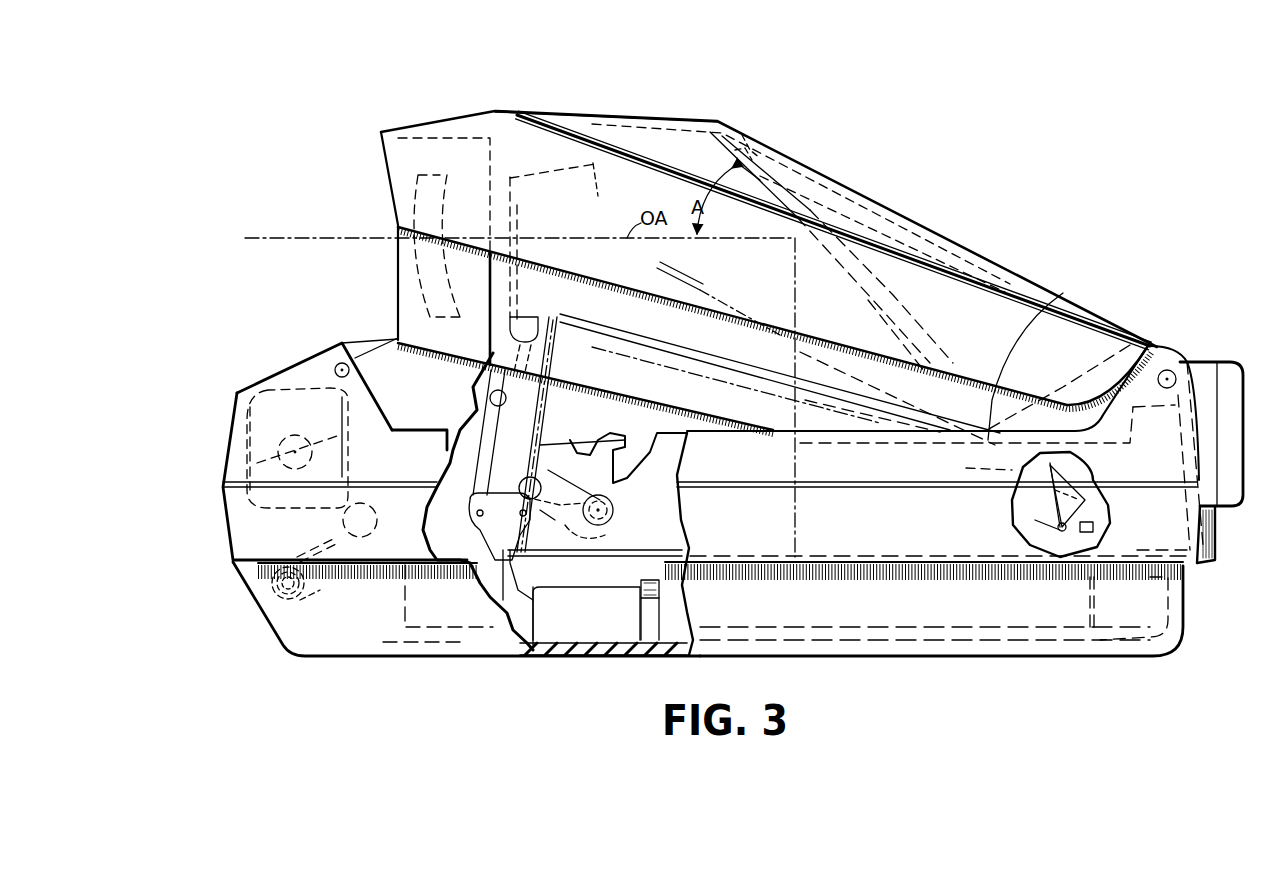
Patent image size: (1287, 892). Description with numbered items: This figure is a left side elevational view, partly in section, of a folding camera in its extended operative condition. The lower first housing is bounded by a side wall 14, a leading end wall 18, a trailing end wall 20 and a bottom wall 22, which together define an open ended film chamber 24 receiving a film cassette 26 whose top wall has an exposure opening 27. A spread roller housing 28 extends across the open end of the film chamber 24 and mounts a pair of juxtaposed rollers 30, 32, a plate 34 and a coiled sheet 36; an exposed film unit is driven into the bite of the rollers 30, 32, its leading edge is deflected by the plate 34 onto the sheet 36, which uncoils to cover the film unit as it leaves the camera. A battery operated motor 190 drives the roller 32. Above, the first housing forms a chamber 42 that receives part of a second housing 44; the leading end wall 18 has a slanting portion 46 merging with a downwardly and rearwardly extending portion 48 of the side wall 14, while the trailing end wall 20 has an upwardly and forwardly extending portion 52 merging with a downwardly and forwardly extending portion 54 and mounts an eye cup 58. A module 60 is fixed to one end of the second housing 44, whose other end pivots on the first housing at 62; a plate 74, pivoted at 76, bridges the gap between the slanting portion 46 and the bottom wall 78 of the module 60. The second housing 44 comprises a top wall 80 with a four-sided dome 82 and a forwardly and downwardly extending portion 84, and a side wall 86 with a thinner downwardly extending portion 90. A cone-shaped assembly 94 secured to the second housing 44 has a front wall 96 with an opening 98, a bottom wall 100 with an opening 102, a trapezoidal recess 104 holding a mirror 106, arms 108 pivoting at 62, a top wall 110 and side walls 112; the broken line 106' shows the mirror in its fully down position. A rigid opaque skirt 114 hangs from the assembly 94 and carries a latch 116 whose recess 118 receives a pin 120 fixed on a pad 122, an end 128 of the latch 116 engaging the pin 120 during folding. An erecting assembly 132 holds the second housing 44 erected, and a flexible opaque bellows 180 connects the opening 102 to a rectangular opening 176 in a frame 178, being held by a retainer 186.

The side wall 14 is at (900, 540).
The leading end wall 18 is at (230, 430).
The trailing end wall 20 is at (1217, 532).
The bottom wall 22 is at (970, 657).
The film chamber 24 is at (531, 652).
The film cassette 26 is at (610, 568).
The exposure opening 27 is at (665, 545).
The spread roller housing 28 is at (350, 668).
The roller 30 is at (357, 580).
The roller 32 is at (374, 511).
The plate 34 is at (305, 549).
The coiled sheet 36 is at (273, 605).
The chamber 42 is at (488, 405).
The second housing 44 is at (830, 158).
The slanting portion 46 is at (294, 362).
The downwardly and rearwardly extending portion 48 is at (376, 398).
The upwardly and forwardly extending portion 52 is at (1166, 369).
The downwardly and forwardly extending portion 54 is at (1110, 416).
The eye cup 58 is at (1246, 382).
The module 60 is at (394, 258).
The pivot 62 is at (1192, 358).
The plate 74 is at (376, 350).
The pivot 76 is at (338, 352).
The bottom wall 78 is at (416, 352).
The top wall 80 is at (892, 250).
The dome 82 is at (629, 118).
The forwardly and downwardly extending portion 84 is at (453, 120).
The side wall 86 is at (987, 289).
The downwardly extending portion 90 is at (1055, 313).
The cone-shaped assembly 94 is at (753, 160).
The front wall 96 is at (525, 185).
The opening 98 is at (517, 217).
The bottom wall 100 is at (540, 315).
The opening 102 is at (693, 348).
The recess 104 is at (755, 186).
The mirror 106 is at (879, 286).
The mirror fully down position 106' is at (723, 296).
The arm 108 is at (1038, 362).
The top wall 110 is at (598, 197).
The side wall 112 is at (903, 326).
The skirt 114 is at (605, 417).
The latch 116 is at (525, 481).
The recess 118 is at (592, 501).
The pin 120 is at (668, 583).
The pad 122 is at (622, 620).
The end 128 is at (619, 498).
The erecting assembly 132 is at (462, 466).
The rectangular opening 176 is at (566, 545).
The frame 178 is at (547, 640).
The bellows 180 is at (557, 387).
The retainer 186 is at (1100, 515).
The motor 190 is at (260, 412).